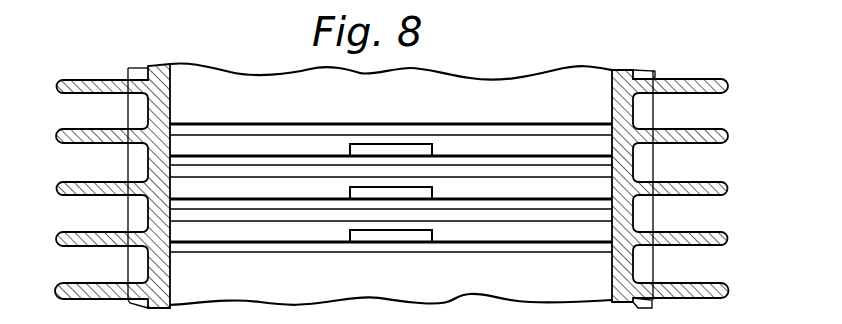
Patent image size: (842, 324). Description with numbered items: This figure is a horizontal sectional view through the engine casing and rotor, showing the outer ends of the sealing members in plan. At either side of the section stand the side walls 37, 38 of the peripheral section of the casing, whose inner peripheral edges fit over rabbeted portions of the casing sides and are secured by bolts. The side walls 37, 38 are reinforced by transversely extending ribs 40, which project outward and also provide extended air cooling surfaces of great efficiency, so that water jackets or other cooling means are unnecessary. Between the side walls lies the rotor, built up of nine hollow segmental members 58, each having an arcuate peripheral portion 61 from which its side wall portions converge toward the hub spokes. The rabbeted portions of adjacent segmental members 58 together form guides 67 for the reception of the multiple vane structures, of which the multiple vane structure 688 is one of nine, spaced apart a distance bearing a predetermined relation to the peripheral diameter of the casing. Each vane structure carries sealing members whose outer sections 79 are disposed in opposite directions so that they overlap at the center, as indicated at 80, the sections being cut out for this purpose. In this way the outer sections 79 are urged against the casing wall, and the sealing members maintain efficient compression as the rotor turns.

The side wall 37 is at (148, 213).
The side wall 38 is at (634, 220).
The transversely extending ribs 40 is at (60, 143).
The segmental member 58 is at (473, 271).
The arcuate peripheral portion 61 is at (344, 278).
The guides 67 is at (557, 123).
The multiple vane structure 688 is at (297, 254).
The outer sections 79 is at (240, 185).
The overlap 80 is at (381, 186).